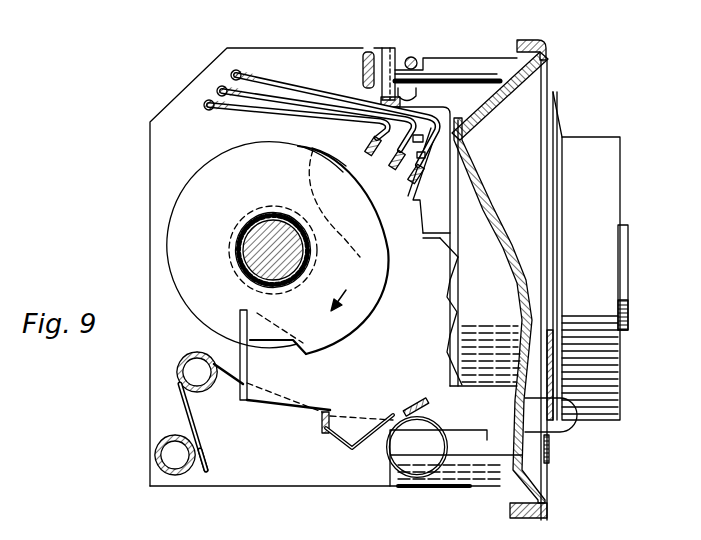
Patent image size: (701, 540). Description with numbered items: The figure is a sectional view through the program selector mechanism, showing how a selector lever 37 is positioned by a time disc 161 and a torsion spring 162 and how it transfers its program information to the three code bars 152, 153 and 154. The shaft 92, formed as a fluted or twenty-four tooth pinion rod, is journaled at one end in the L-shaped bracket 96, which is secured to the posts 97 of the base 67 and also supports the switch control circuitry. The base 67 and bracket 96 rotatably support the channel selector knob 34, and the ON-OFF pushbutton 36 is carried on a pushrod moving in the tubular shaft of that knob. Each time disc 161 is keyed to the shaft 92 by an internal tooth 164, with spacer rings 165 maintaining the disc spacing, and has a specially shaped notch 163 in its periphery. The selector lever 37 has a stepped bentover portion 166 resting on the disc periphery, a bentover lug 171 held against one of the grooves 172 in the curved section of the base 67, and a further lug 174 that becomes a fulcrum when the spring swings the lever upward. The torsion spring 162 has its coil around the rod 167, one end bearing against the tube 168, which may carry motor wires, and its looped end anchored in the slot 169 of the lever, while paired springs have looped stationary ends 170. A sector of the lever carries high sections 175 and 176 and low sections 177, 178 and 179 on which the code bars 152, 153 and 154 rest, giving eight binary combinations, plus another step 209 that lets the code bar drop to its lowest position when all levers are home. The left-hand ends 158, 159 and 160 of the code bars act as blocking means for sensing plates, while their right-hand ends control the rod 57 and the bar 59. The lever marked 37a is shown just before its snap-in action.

The L-shaped bracket 96 is at (168, 156).
The selector lever 37 is at (360, 377).
The bar 59 is at (368, 50).
The rod 57 is at (412, 57).
The post 97 is at (458, 58).
The base 67 is at (546, 56).
The channel selector knob 34 is at (580, 182).
The ON-OFF pushbutton 36 is at (624, 236).
The lever 37a is at (566, 432).
The groove 172 is at (516, 292).
The step 209 is at (455, 346).
The low section 177 is at (460, 314).
The high section 175 is at (461, 259).
The low section 178 is at (433, 239).
The high section 176 is at (420, 210).
The time disc 161 is at (187, 231).
The low section 179 is at (337, 160).
The spacer ring 165 is at (268, 206).
The internal tooth 164 is at (257, 284).
The shaft 92 is at (262, 254).
The code bar 154 is at (304, 91).
The code bar 153 is at (266, 99).
The code bar 152 is at (262, 109).
The code bar end 158 is at (368, 141).
The code bar end 159 is at (396, 168).
The code bar end 160 is at (414, 185).
The stepped bentover portion 166 is at (239, 344).
The notch 163 is at (290, 352).
The rod 167 is at (187, 356).
The looped stationary end 170 is at (206, 480).
The tube 168 is at (155, 458).
The lug 174 is at (320, 430).
The torsion spring 162 is at (356, 451).
The slot 169 is at (402, 410).
The bentover lug 171 is at (494, 437).